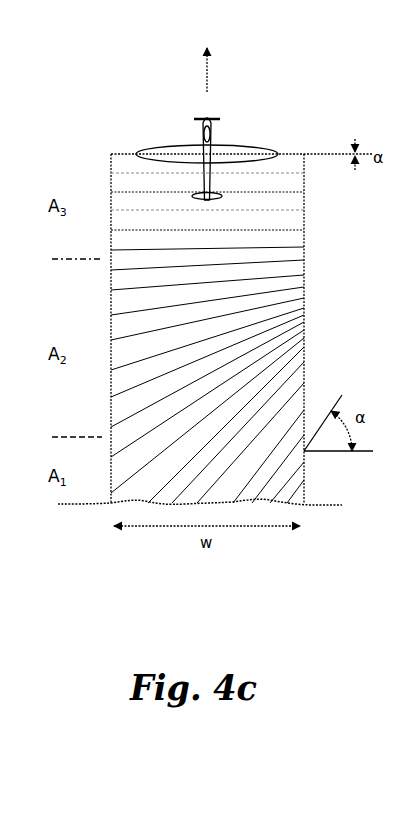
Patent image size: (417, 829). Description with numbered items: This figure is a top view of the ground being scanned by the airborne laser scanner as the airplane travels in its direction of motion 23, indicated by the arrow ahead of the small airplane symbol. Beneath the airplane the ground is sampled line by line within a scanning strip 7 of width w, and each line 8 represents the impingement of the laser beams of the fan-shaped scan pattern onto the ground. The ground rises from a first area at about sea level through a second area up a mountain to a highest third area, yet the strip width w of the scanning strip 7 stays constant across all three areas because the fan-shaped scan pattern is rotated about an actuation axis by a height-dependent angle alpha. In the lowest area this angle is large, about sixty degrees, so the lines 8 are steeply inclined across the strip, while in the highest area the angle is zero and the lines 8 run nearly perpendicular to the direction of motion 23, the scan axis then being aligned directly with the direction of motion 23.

The direction of motion 23 is at (210, 72).
The scanning strip 7 is at (305, 238).
The lines 8 is at (285, 275).